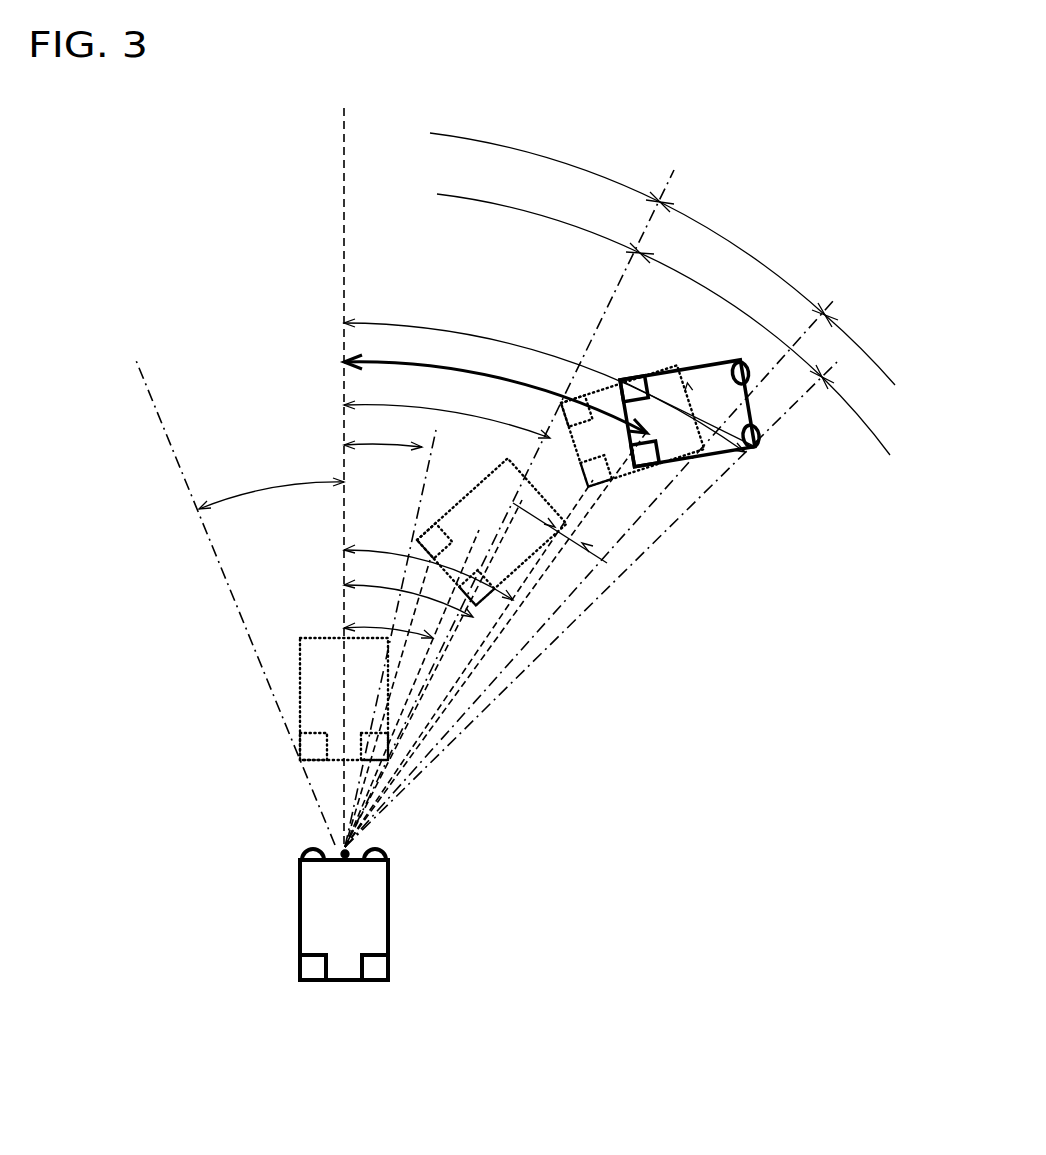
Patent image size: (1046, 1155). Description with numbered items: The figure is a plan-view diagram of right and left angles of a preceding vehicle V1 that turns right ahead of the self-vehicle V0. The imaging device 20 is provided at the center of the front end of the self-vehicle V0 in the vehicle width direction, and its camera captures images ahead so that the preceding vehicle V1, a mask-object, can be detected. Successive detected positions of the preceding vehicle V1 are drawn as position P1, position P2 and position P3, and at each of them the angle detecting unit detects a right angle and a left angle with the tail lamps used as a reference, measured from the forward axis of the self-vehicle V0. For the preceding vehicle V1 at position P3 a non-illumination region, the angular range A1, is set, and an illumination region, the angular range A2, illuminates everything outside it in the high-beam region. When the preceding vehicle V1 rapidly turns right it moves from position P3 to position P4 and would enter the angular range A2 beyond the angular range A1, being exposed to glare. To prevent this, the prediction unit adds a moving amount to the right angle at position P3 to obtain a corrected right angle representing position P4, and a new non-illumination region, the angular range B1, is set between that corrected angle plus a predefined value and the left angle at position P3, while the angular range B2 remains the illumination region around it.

The imaging device 20 is at (345, 860).
The self-vehicle V0 is at (300, 943).
The preceding vehicle V1 is at (495, 532).
The position P1 is at (300, 682).
The position P2 is at (484, 468).
The position P3 is at (614, 390).
The position P4 is at (718, 366).
The angular range A1 is at (749, 264).
The angular range A2 is at (662, 259).
The angular range B1 is at (737, 321).
The angular range B2 is at (663, 324).